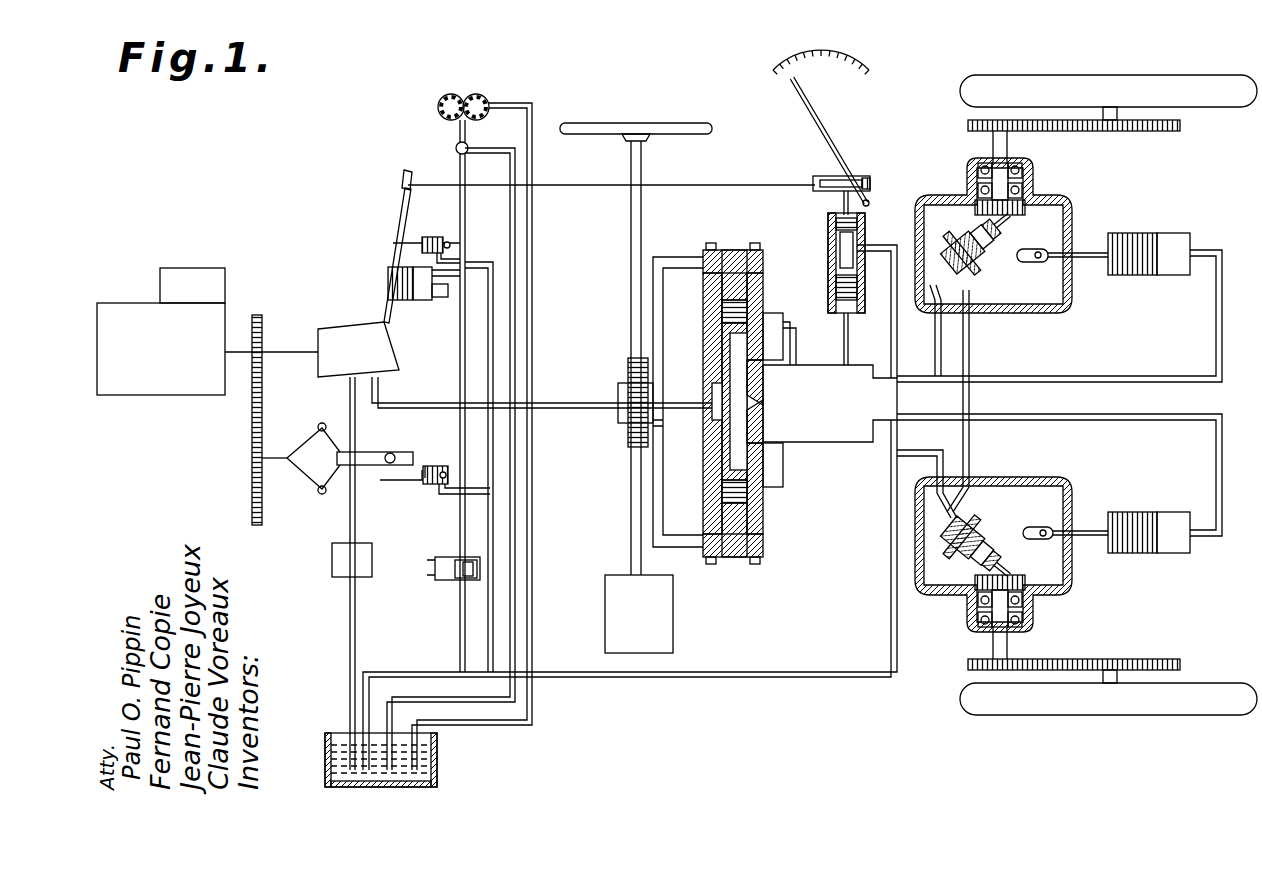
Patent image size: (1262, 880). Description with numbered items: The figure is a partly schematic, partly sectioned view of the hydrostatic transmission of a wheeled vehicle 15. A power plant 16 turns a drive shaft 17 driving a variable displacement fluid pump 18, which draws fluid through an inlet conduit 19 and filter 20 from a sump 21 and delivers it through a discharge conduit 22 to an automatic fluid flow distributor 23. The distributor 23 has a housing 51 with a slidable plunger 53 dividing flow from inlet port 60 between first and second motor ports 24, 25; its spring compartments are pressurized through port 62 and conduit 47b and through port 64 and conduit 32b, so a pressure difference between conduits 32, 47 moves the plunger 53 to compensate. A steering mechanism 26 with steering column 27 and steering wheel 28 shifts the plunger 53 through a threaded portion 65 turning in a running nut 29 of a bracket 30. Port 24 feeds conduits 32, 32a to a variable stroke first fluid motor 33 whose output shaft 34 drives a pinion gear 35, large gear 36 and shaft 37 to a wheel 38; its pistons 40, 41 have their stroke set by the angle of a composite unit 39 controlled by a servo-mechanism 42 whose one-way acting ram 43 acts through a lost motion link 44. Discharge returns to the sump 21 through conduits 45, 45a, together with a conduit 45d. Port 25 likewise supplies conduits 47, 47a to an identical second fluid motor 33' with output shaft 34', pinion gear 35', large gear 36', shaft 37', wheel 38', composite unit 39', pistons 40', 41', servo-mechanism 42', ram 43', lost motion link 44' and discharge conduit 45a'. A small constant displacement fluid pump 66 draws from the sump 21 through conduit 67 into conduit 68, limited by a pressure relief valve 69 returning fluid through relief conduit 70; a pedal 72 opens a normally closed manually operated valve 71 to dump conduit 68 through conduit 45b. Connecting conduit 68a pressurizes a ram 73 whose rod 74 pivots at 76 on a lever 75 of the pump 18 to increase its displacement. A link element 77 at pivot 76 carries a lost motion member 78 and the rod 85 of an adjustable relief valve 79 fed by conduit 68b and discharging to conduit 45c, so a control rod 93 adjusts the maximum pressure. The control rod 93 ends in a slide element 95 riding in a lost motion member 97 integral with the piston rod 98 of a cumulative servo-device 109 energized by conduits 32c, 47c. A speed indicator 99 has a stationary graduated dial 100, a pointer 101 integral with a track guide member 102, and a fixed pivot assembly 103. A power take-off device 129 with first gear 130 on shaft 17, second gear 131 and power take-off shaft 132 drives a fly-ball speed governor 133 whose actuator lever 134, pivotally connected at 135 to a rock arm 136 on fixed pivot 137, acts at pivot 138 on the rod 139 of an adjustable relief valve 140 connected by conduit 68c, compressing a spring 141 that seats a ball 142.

The vehicle 15 is at (713, 84).
The power plant 16 is at (161, 331).
The drive shaft 17 is at (234, 350).
The fluid pump 18 is at (358, 349).
The inlet conduit 19 is at (348, 537).
The filter 20 is at (352, 560).
The sump 21 is at (440, 760).
The discharge conduit 22 is at (418, 402).
The automatic fluid flow distributor 23 is at (700, 310).
The first fluid motor port 24 is at (765, 370).
The second fluid motor port 25 is at (765, 445).
The steering mechanism 26 is at (639, 614).
The steering column 27 is at (642, 231).
The steering wheel 28 is at (626, 126).
The running nut 29 is at (618, 398).
The bracket 30 is at (702, 474).
The conduit 32 is at (835, 362).
The conduit 32a is at (941, 328).
The conduit 32b is at (785, 332).
The conduit 32c is at (849, 340).
The first fluid motor 33 is at (1003, 235).
The output shaft 34 is at (1021, 173).
The pinion gear 35 is at (1047, 119).
The large gear 36 is at (1191, 147).
The shaft 37 is at (1086, 102).
The wheel 38 is at (1108, 79).
The composite unit 39 is at (1007, 288).
The piston 40 is at (974, 239).
The piston 41 is at (1025, 235).
The servo-mechanism 42 is at (1174, 236).
The one-way acting ram 43 is at (1132, 237).
The lost motion link 44 is at (1062, 268).
The conduit 45 is at (790, 672).
The conduit 45a is at (990, 401).
The conduit 45a' is at (986, 457).
The conduit 45b is at (460, 630).
The conduit 45c is at (493, 328).
The branch line 45d is at (478, 488).
The conduit 47 is at (846, 443).
The conduit 47a is at (940, 441).
The conduit 47b is at (790, 482).
The conduit 47c is at (888, 245).
The housing 51 is at (708, 462).
The plunger 53 is at (735, 345).
The inlet port 60 is at (713, 395).
The port 62 is at (765, 498).
The port 64 is at (760, 315).
The threaded portion 65 is at (630, 365).
The constant displacement fluid pump 66 is at (470, 92).
The conduit 67 is at (530, 98).
The conduit 68 is at (465, 212).
The connecting conduit 68a is at (424, 292).
The conduit 68b is at (443, 240).
The conduit 68c is at (445, 466).
The pressure relief valve 69 is at (470, 147).
The relief conduit 70 is at (510, 234).
The manually operated valve 71 is at (470, 556).
The pedal 72 is at (420, 568).
The ram 73 is at (395, 298).
The rod 74 is at (390, 312).
The lever 75 is at (378, 325).
The pivot 76 is at (380, 290).
The link element 77 is at (393, 233).
The lost motion member 78 is at (402, 186).
The adjustable relief valve 79 is at (437, 236).
The rod 85 is at (424, 274).
The control rod 93 is at (692, 185).
The slide element 95 is at (852, 177).
The lost motion member 97 is at (873, 183).
The piston rod 98 is at (838, 203).
The speed indicator 99 is at (810, 44).
The graduated dial 100 is at (852, 52).
The pointer 101 is at (798, 80).
The track guide member 102 is at (814, 107).
The fixed pivot assembly 103 is at (822, 125).
The cumulative servo-device 109 is at (867, 224).
The power take-off device 129 is at (245, 425).
The first gear 130 is at (264, 326).
The second gear 131 is at (265, 414).
The power take-off shaft 132 is at (250, 460).
The fly-ball speed governor 133 is at (318, 427).
The actuator lever 134 is at (372, 452).
The pivotal connection 135 is at (378, 457).
The rock arm 136 is at (409, 456).
The fixed pivot 137 is at (385, 466).
The pivotal connection 138 is at (405, 467).
The rod 139 is at (395, 481).
The adjustable relief valve 140 is at (432, 466).
The spring 141 is at (425, 481).
The ball 142 is at (427, 488).
The second fluid motor 33' is at (1017, 554).
The output shaft 34' is at (1021, 617).
The pinion gear 35' is at (1043, 683).
The large gear 36' is at (1176, 652).
The shaft 37' is at (1079, 709).
The wheel 38' is at (1108, 727).
The composite unit 39' is at (1014, 494).
The piston 40' is at (977, 551).
The piston 41' is at (1024, 519).
The servo-mechanism 42' is at (1178, 519).
The one-way acting ram 43' is at (1134, 519).
The lost motion link 44' is at (1065, 549).